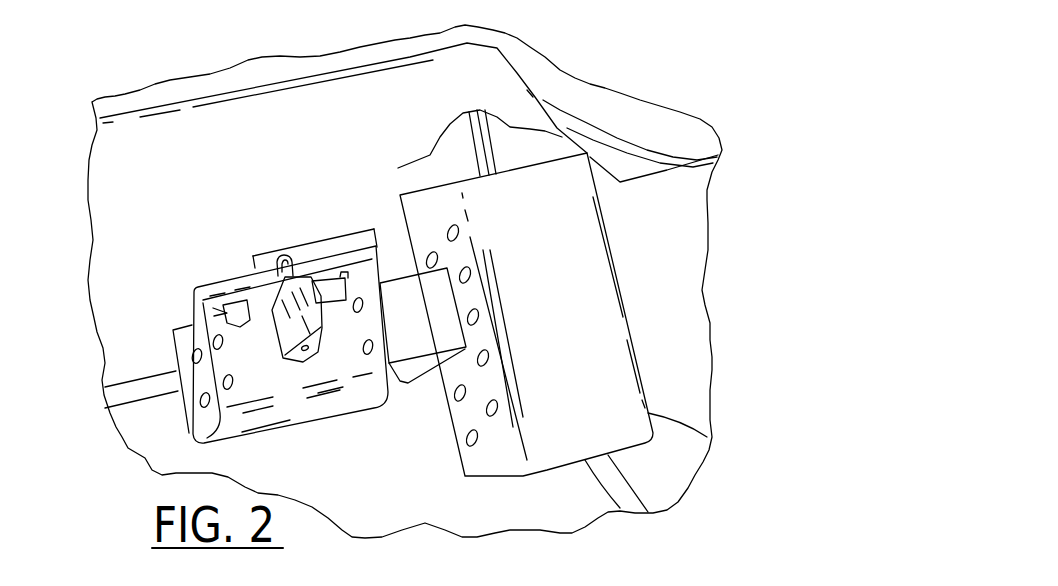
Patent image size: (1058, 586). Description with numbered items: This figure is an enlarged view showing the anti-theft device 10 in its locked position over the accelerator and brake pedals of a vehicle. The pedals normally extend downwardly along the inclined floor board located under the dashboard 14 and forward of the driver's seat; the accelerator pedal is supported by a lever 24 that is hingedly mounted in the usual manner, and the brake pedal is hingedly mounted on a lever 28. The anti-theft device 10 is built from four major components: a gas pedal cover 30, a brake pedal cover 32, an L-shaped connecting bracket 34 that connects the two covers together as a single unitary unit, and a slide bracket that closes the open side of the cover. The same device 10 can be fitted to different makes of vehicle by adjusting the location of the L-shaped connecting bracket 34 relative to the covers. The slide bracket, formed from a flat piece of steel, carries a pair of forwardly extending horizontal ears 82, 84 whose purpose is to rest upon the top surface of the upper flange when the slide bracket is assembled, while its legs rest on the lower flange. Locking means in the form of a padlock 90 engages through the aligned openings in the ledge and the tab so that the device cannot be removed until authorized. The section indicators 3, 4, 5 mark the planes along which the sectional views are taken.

The anti-theft device 10 is at (411, 468).
The dashboard 14 is at (125, 173).
The lever 24 is at (483, 158).
The lever 28 is at (262, 262).
The gas pedal cover 30 is at (611, 381).
The brake pedal cover 32 is at (205, 440).
The L-shaped connecting bracket 34 is at (413, 343).
The ear 82 is at (200, 300).
The ear 84 is at (335, 292).
The padlock 90 is at (292, 332).
The section line 3- 3 is at (467, 196).
The section line 4- 4 is at (308, 253).
The section line 5- 5 is at (200, 380).